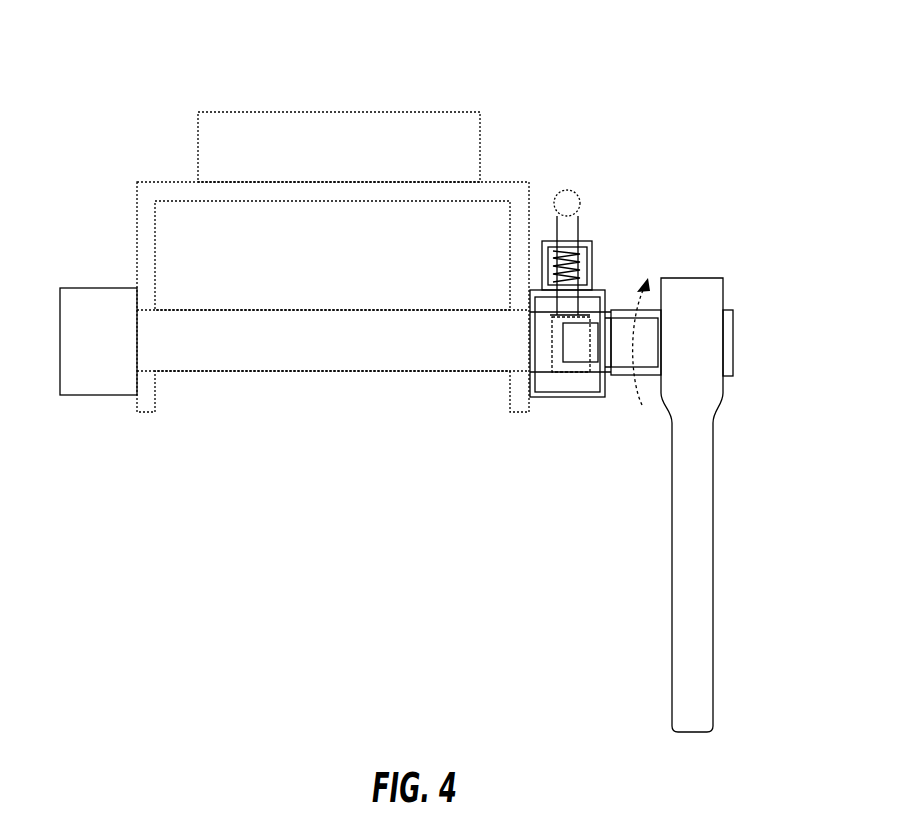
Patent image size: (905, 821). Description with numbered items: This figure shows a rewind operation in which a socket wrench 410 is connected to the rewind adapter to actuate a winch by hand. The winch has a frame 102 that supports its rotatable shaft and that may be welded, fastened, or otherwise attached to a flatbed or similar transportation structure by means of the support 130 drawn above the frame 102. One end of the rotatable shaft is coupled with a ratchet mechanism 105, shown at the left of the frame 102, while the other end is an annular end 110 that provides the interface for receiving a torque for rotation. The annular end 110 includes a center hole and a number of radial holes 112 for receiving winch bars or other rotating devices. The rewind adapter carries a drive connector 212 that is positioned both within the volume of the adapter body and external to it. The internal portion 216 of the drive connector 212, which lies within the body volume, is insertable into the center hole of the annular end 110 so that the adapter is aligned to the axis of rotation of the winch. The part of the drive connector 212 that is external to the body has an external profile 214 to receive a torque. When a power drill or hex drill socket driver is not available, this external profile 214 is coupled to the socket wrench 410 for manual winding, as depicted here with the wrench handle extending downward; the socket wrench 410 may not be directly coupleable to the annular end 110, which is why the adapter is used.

The frame 102 is at (162, 182).
The ratchet mechanism 105 is at (85, 288).
The annular end 110 is at (583, 315).
The radial holes 112 is at (558, 317).
The support 130 is at (442, 112).
The drive connector 212 is at (607, 373).
The external profile 214 is at (625, 312).
The internal portion 216 is at (572, 373).
The socket wrench 410 is at (693, 628).